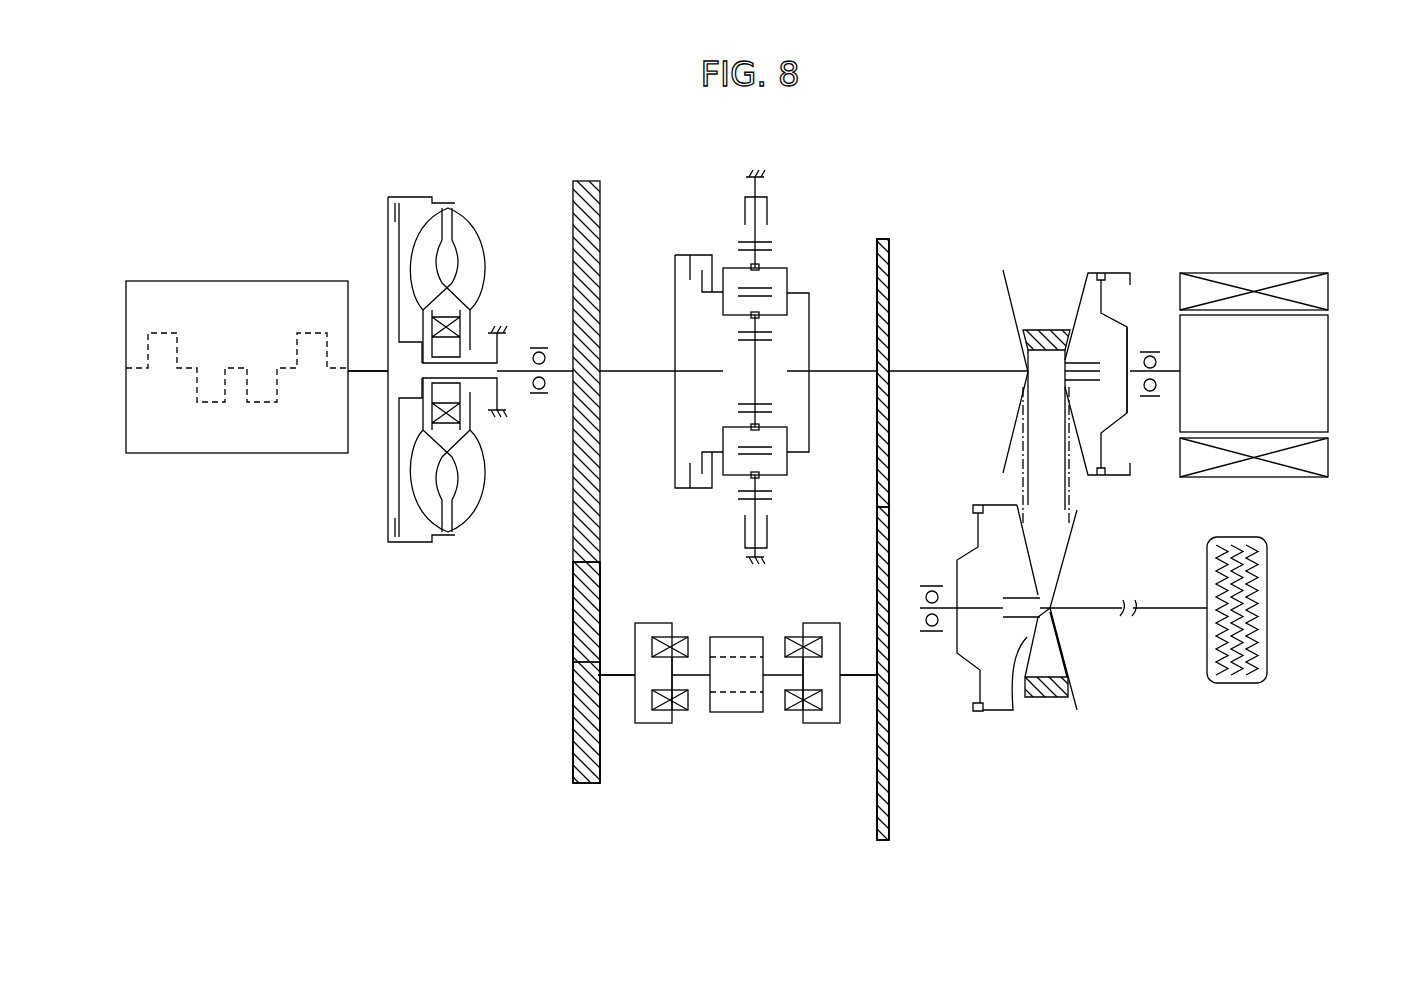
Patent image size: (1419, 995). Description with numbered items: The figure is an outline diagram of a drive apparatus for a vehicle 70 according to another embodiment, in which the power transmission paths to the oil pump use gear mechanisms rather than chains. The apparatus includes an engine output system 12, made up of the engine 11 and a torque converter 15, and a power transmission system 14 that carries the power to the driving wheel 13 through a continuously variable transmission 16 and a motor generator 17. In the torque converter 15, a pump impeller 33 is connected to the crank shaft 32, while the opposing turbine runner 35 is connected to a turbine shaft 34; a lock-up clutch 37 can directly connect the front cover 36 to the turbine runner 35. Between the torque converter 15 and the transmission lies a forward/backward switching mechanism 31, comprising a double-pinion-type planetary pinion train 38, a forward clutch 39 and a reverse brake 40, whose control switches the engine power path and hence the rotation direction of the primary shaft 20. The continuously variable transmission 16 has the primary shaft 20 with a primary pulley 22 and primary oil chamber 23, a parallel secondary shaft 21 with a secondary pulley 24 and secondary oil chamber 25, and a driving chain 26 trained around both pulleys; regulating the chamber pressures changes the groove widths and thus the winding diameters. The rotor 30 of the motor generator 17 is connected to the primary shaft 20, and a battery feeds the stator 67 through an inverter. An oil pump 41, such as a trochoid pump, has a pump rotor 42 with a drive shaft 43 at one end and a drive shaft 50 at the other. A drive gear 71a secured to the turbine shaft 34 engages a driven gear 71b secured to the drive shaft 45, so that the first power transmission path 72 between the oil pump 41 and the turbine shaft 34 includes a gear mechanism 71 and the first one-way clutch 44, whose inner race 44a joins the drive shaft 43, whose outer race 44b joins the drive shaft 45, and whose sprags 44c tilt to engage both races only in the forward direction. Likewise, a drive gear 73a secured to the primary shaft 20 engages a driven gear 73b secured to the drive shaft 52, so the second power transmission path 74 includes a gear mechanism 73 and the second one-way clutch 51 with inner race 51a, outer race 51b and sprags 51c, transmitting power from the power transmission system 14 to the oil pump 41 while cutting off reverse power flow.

The drive apparatus for a vehicle 70 is at (188, 162).
The engine 11 is at (152, 453).
The engine output system 12 is at (284, 252).
The crank shaft 32 is at (370, 376).
The torque converter 15 is at (462, 194).
The pump impeller 33 is at (476, 245).
The turbine runner 35 is at (428, 240).
The front cover 36 is at (388, 244).
The lock-up clutch 37 is at (388, 203).
The turbine shaft 34 is at (517, 362).
The first power transmission path 72 is at (586, 176).
The gear mechanism 71 is at (480, 572).
The drive gear 71a is at (575, 545).
The driven gear 71b is at (575, 668).
The second power transmission path 74 is at (883, 234).
The gear mechanism 73 is at (955, 405).
The drive gear 73a is at (888, 446).
The driven gear 73b is at (888, 522).
The forward/backward switching mechanism 31 is at (806, 274).
The double-pinion-type planetary pinion train 38 is at (730, 486).
The forward clutch 39 is at (706, 255).
The reverse brake 40 is at (768, 204).
The primary shaft 20 is at (845, 368).
The continuously variable transmission 16 is at (1004, 228).
The primary pulley 22 is at (1090, 272).
The primary oil chamber 23 is at (1118, 332).
The driving chain 26 is at (1045, 330).
The secondary pulley 24 is at (1020, 638).
The secondary oil chamber 25 is at (980, 670).
The secondary shaft 21 is at (1083, 605).
The driving wheel 13 is at (1237, 537).
The power transmission system 14 is at (1214, 178).
The motor generator 17 is at (1302, 262).
The rotor 30 is at (1318, 362).
The stator 67 is at (1318, 458).
The oil pump 41 is at (755, 637).
The drive shaft 45 is at (620, 675).
The drive shaft 52 is at (860, 675).
The pump rotor 42 is at (736, 668).
The drive shaft 43 is at (700, 672).
The first one-way clutch 44 is at (660, 725).
The inner race 44a is at (673, 675).
The outer race 44b is at (657, 727).
The sprags 44c is at (693, 693).
The drive shaft 50 is at (778, 672).
The second one-way clutch 51 is at (805, 725).
The inner race 51a is at (797, 680).
The outer race 51b is at (823, 727).
The sprags 51c is at (790, 710).